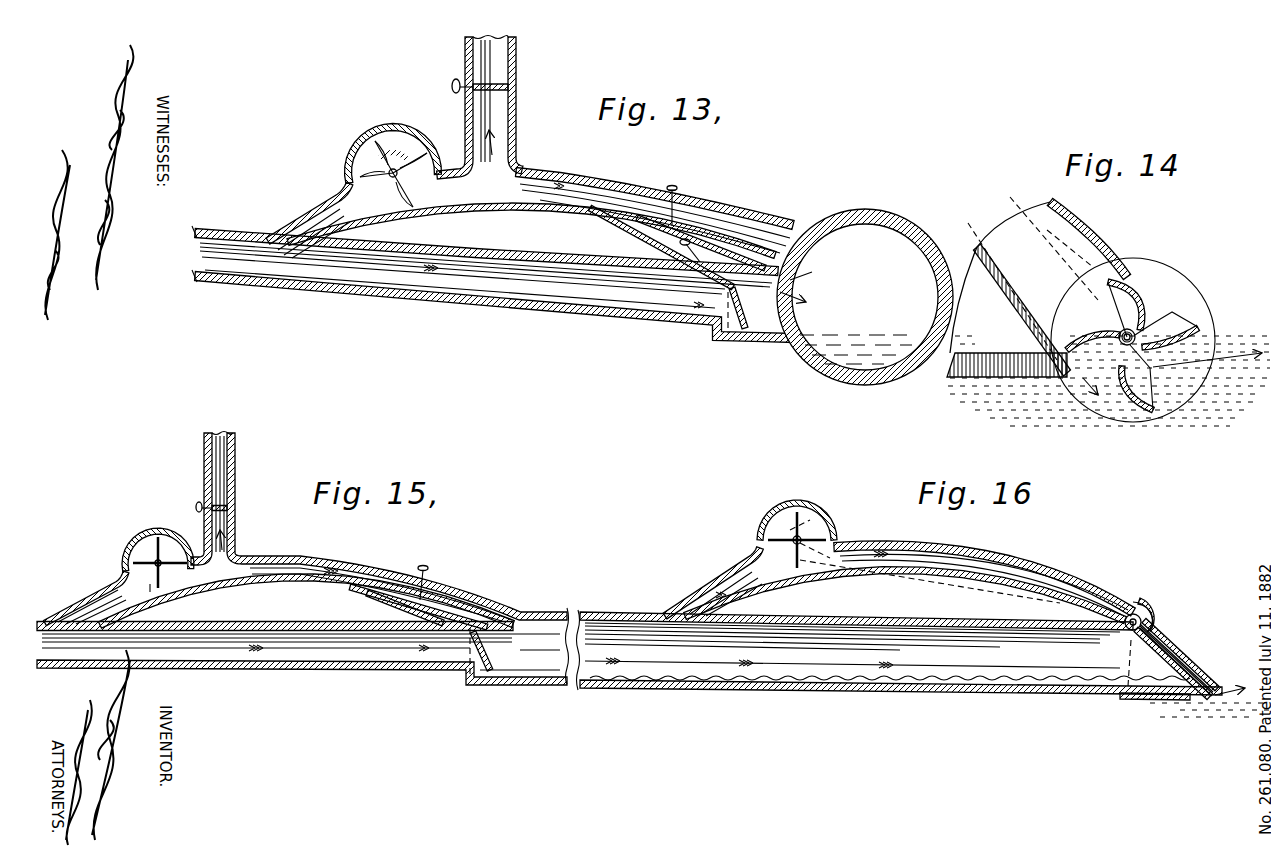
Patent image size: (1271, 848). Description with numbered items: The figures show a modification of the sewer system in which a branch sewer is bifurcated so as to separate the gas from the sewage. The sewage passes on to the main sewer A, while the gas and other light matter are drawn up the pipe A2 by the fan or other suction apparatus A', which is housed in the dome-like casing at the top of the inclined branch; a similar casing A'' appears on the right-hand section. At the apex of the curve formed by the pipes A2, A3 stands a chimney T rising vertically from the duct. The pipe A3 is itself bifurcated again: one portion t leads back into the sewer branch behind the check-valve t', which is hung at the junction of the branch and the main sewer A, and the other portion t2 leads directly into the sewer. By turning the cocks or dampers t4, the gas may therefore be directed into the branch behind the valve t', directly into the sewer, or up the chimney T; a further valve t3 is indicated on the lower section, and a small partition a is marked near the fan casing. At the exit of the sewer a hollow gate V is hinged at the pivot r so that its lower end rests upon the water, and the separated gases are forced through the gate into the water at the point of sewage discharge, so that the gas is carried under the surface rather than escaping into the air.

In FIG. 13, the sewer A is at (572, 297).
In FIG. 16, the sewer A is at (900, 652).
In FIG. 13, the fan or other suction apparatus A' is at (393, 161).
In FIG. 15, the fan or other suction apparatus A' is at (158, 549).
In FIG. 16, the fan casing (dome) A'' is at (803, 534).
In FIG. 13, the pipe A2 is at (309, 220).
In FIG. 15, the pipe A2 is at (86, 598).
In FIG. 16, the pipe A2 is at (713, 583).
In FIG. 13, the pipe A3 is at (540, 206).
In FIG. 16, the pipe A3 is at (910, 581).
In FIG. 13, the chimney T is at (480, 108).
In FIG. 15, the chimney T is at (379, 526).
In FIG. 13, the portion of pipe A3 t is at (678, 247).
In FIG. 15, the portion of pipe A3 t is at (416, 606).
In FIG. 13, the check-valve t' is at (743, 310).
In FIG. 15, the check-valve t' is at (435, 640).
In FIG. 13, the portion of pipe A3 t2 is at (750, 233).
In FIG. 15, the valve t3 is at (474, 606).
In FIG. 13, the cocks or dampers t4 is at (576, 167).
In FIG. 15, the cocks or dampers t4 is at (312, 546).
In FIG. 14, the hollow gate V is at (1108, 311).
In FIG. 16, the hollow gate V is at (1195, 667).
In FIG. 14, the pivot shaft r is at (1145, 325).
In FIG. 16, the pivot shaft r is at (1147, 614).
In FIG. 15, the partition a is at (143, 588).